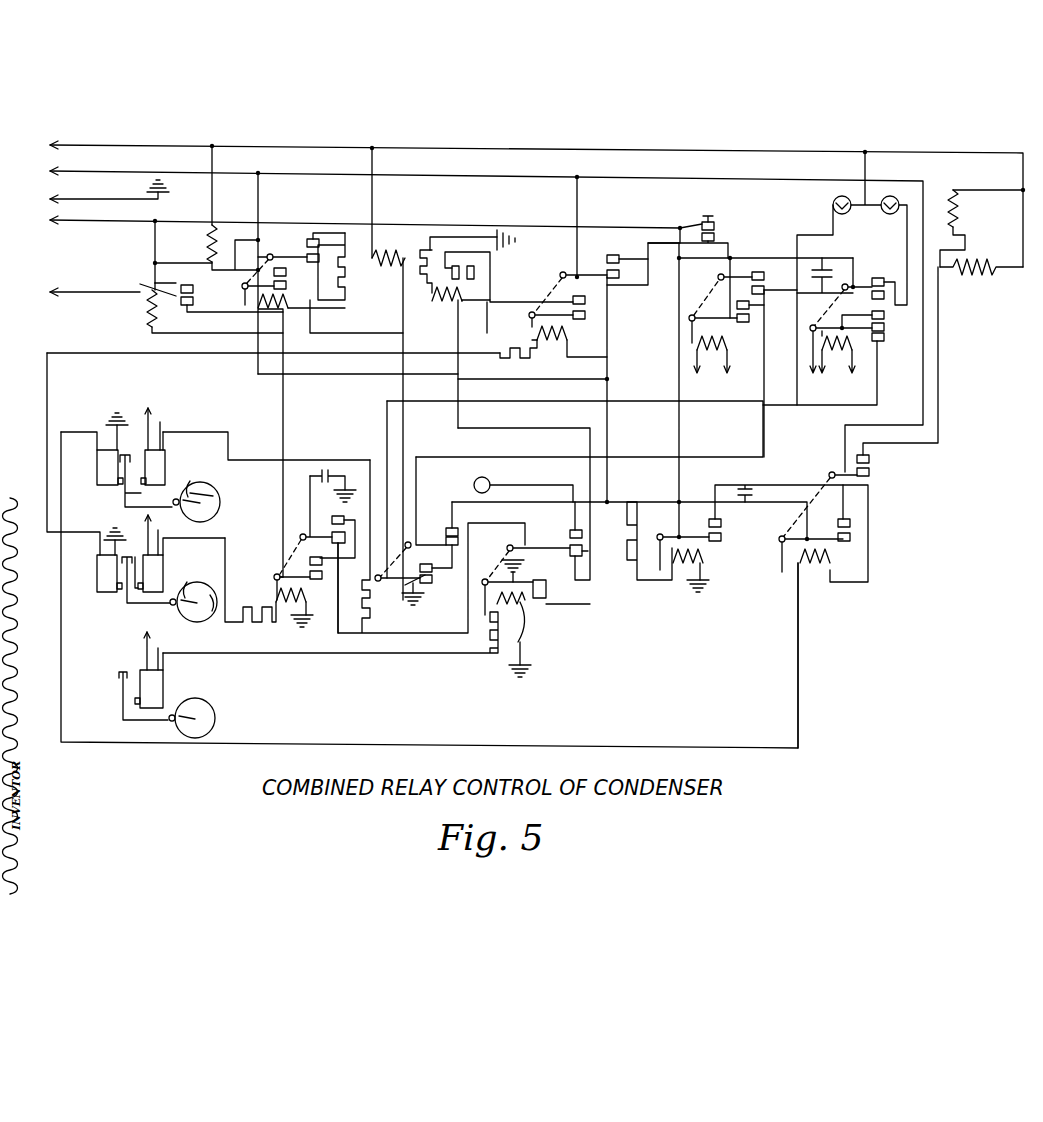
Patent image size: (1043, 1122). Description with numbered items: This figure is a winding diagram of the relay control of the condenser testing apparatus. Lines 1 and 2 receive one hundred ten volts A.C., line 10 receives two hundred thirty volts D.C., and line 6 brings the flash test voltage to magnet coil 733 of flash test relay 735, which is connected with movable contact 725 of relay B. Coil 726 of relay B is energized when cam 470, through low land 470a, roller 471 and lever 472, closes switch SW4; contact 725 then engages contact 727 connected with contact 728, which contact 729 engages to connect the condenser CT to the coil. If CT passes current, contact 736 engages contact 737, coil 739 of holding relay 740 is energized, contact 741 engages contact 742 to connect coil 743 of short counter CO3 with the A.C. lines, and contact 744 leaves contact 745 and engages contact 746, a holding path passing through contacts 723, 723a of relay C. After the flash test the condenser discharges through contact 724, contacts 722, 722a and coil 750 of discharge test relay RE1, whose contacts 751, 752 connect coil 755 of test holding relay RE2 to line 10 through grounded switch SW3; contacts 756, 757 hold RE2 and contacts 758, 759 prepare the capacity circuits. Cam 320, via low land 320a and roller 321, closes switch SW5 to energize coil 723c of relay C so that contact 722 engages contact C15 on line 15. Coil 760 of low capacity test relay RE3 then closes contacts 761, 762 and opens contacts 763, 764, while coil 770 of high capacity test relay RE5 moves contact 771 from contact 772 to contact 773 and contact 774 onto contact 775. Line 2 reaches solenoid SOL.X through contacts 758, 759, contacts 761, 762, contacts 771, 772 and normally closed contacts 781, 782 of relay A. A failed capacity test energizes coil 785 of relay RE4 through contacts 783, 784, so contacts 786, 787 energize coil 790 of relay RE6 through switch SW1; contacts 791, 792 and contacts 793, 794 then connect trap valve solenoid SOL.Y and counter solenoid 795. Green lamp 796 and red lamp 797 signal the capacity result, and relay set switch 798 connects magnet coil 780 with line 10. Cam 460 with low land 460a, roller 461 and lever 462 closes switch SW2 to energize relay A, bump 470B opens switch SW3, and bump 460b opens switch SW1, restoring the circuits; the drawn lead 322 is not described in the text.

The line 1 is at (50, 145).
The line 2 is at (51, 172).
The line 6 is at (50, 292).
The line 10 is at (48, 220).
The magnet coil 733 is at (145, 304).
The flash test relay 735 is at (137, 281).
The contact 736 is at (194, 289).
The contact 737 is at (194, 301).
The coil 739 is at (263, 305).
The holding relay 740 is at (270, 238).
The contact 741 is at (286, 285).
The contact 742 is at (286, 272).
The coil 743 is at (217, 241).
The contact 744 is at (306, 250).
The contact 745 is at (356, 283).
The contact 746 is at (320, 248).
The coil 750 is at (463, 294).
The contact 751 is at (476, 274).
The contact 752 is at (509, 271).
The coil 755 is at (535, 333).
The contact 756 is at (567, 316).
The contact 757 is at (573, 299).
The contact 758 is at (604, 270).
The contact 759 is at (612, 256).
The coil 760 is at (730, 348).
The contact 761 is at (723, 311).
The contact 762 is at (752, 304).
The contact 763 is at (769, 284).
The contact 764 is at (743, 270).
The coil 770 is at (845, 356).
The contact 771 is at (884, 328).
The contact 772 is at (884, 341).
The contact 773 is at (884, 316).
The contact 774 is at (867, 296).
The contact 775 is at (872, 278).
The magnet coil 780 is at (408, 604).
The contact 781 is at (430, 578).
The contact 782 is at (438, 565).
The contact 783 is at (446, 538).
The contact 784 is at (440, 519).
The coil 785 is at (698, 559).
The contact 786 is at (700, 551).
The contact 787 is at (788, 533).
The coil 790 is at (826, 559).
The contact 791 is at (831, 507).
The contact 792 is at (831, 522).
The contact 793 is at (870, 477).
The contact 794 is at (870, 462).
The counter operating solenoid 795 is at (856, 215).
The green lamp 796 is at (839, 278).
The red signal lamp 797 is at (892, 250).
The relay set switch 798 is at (714, 232).
The line 15 is at (523, 489).
The cam 320 is at (216, 723).
The low land 320a is at (206, 710).
The roller 321 is at (168, 725).
The lead 322 is at (123, 709).
The cam 460 is at (216, 512).
The low land 460a is at (218, 491).
The bump 460b is at (194, 480).
The roller 461 is at (175, 506).
The lever 462 is at (120, 494).
The cam 470 is at (190, 622).
The low land 470a is at (214, 609).
The bump 470B is at (188, 591).
The roller 471 is at (173, 606).
The lever 472 is at (118, 605).
The movable contact 722 is at (570, 547).
The contact 722a is at (567, 555).
The contact 723 is at (525, 583).
The contact 723a is at (568, 596).
The coil 723c is at (528, 644).
The contact 724 is at (312, 554).
The movable contact 725 is at (299, 586).
The coil 726 is at (313, 610).
The contact 727 is at (303, 553).
The contact 728 is at (337, 493).
The contact 729 is at (336, 529).
The short counter CO3 is at (182, 252).
The condenser CT is at (316, 466).
The contact C15 is at (570, 534).
The solenoid X SOL.X is at (382, 374).
The trap valve operating solenoid SOL.Y is at (943, 357).
The discharge test relay RE1 is at (453, 306).
The test holding relay RE2 is at (554, 390).
The low capacity test relay RE3 is at (765, 356).
The relay RE4 is at (652, 557).
The high capacity test relay RE5 is at (798, 352).
The relay RE6 is at (783, 570).
The switch SW1 is at (97, 467).
The switch SW2 is at (164, 462).
The switch SW3 is at (97, 573).
The switch SW4 is at (164, 557).
The switch SW5 is at (164, 686).
The relay A is at (431, 546).
The relay B is at (275, 570).
The relay C is at (522, 625).